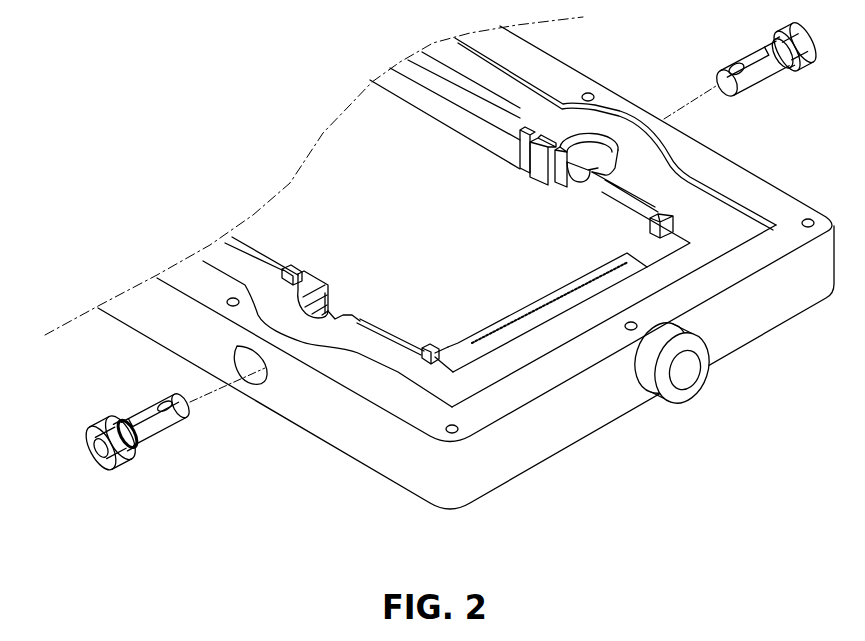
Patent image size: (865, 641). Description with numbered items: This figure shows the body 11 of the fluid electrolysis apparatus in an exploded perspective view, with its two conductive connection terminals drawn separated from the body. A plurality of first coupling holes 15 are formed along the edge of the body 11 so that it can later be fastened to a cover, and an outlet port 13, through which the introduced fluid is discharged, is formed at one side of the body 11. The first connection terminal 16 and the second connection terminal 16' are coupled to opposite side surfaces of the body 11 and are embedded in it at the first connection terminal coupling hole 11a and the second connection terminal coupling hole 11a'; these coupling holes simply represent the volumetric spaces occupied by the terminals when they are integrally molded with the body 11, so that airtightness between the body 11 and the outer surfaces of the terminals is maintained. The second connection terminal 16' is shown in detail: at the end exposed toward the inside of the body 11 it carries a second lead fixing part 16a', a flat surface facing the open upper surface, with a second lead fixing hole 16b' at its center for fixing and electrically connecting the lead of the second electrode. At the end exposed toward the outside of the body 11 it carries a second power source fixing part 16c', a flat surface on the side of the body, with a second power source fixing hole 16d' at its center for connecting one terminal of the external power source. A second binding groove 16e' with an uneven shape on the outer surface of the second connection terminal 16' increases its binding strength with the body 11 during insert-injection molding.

The body 11 is at (466, 291).
The first connection terminal coupling hole 11a is at (544, 174).
The second connection terminal coupling hole 11a' is at (279, 416).
The outlet port 13 is at (688, 368).
The first coupling holes 15 is at (532, 235).
The first connection terminal 16 is at (749, 74).
The second connection terminal 16' is at (136, 454).
The second lead fixing part 16a' is at (153, 410).
The second lead fixing hole 16b' is at (165, 406).
The second power source fixing part 16c' is at (110, 442).
The second power source fixing hole 16d' is at (101, 447).
The second binding groove 16e' is at (126, 434).